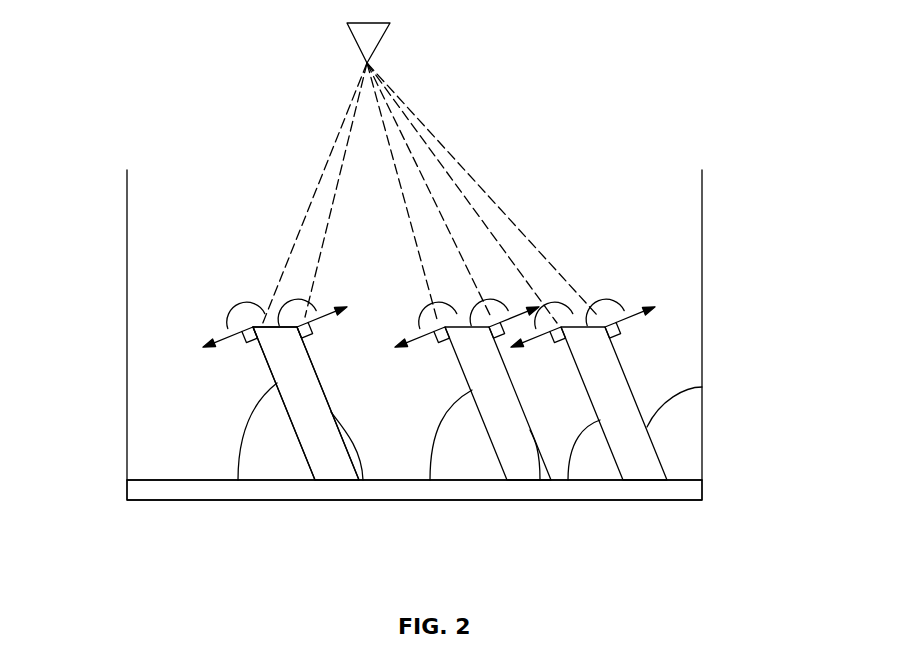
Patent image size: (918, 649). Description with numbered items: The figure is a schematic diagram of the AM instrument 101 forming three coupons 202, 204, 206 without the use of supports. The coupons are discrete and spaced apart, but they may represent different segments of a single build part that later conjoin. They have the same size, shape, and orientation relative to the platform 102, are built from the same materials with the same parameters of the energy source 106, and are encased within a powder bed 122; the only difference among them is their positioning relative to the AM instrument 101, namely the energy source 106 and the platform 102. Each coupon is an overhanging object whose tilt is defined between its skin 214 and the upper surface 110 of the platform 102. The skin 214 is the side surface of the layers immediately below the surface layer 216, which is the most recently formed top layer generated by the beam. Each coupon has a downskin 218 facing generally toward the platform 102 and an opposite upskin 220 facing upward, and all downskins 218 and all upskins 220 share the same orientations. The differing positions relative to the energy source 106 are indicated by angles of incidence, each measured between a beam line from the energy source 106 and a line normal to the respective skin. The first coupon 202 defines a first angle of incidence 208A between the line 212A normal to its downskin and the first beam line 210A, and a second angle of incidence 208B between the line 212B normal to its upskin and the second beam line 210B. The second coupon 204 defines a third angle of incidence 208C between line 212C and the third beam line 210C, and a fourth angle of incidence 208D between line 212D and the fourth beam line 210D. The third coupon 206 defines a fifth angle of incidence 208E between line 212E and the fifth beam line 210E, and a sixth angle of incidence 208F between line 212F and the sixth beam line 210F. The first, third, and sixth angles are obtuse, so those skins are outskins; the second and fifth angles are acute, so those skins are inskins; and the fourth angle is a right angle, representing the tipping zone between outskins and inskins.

The AM instrument 101 is at (155, 90).
The energy source 106 is at (366, 33).
The upper surface 110 is at (170, 478).
The platform 102 is at (193, 492).
The powder bed 122 is at (152, 416).
The first coupon 202 is at (307, 430).
The second coupon 204 is at (502, 438).
The third coupon 206 is at (618, 413).
The skin 214 is at (270, 362).
The surface layer 216 is at (282, 327).
The downskin 218 is at (238, 480).
The upskin 220 is at (363, 480).
The first beam line 210A is at (305, 207).
The second beam line 210B is at (333, 192).
The third beam line 210C is at (392, 147).
The fourth beam line 210D is at (418, 173).
The fifth beam line 210E is at (455, 176).
The sixth beam line 210F is at (563, 280).
The line normal to downskin 212A is at (223, 337).
The line normal to upskin 212B is at (325, 308).
The line normal to downskin 212C is at (413, 333).
The line normal to upskin 212D is at (523, 312).
The line normal to downskin 212E is at (538, 343).
The line normal to upskin 212F is at (633, 308).
The first angle of incidence 208A is at (243, 323).
The second angle of incidence 208B is at (312, 300).
The third angle of incidence 208C is at (433, 305).
The fourth angle of incidence 208D is at (497, 292).
The fifth angle of incidence 208E is at (543, 292).
The sixth angle of incidence 208F is at (607, 297).